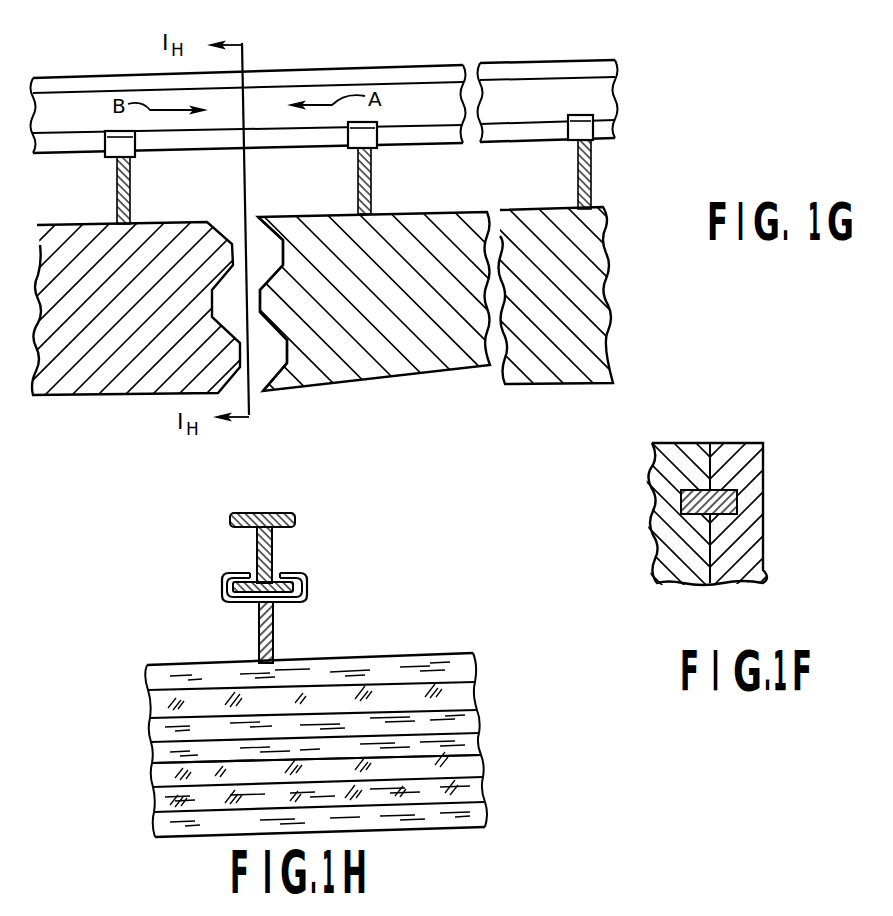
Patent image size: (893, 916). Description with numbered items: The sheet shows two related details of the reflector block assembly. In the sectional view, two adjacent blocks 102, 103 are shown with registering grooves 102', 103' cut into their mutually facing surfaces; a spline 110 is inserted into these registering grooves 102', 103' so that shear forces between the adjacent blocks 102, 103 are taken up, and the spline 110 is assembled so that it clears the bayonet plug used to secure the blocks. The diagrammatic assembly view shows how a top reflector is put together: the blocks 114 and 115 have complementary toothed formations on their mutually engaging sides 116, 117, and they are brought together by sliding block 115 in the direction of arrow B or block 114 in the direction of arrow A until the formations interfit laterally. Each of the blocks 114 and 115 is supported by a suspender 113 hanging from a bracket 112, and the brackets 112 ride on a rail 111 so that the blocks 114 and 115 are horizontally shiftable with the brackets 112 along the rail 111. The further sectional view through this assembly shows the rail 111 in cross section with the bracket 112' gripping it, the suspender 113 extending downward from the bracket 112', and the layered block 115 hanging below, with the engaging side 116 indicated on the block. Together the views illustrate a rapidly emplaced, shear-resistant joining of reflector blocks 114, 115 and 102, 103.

In FIG. 1G, the rail 111 is at (600, 62).
In FIG. 1H, the rail 111 is at (295, 516).
In FIG. 1G, the bracket 112 is at (378, 147).
In FIG. 1H, the clamp (section) 112' is at (299, 577).
In FIG. 1G, the suspender 113 is at (591, 186).
In FIG. 1H, the suspender 113 is at (273, 633).
In FIG. 1G, the block 114 is at (588, 301).
In FIG. 1G, the block 115 is at (135, 377).
In FIG. 1H, the block 115 is at (415, 653).
In FIG. 1G, the mutually engaging side 116 is at (224, 236).
In FIG. 1H, the mutually engaging side 116 is at (470, 738).
In FIG. 1G, the mutually engaging side 117 is at (281, 242).
In FIG. 1F, the block 102 is at (685, 540).
In FIG. 1F, the groove 102' is at (663, 484).
In FIG. 1F, the block 103 is at (730, 520).
In FIG. 1F, the groove 103' is at (760, 523).
In FIG. 1F, the spline 110 is at (681, 514).